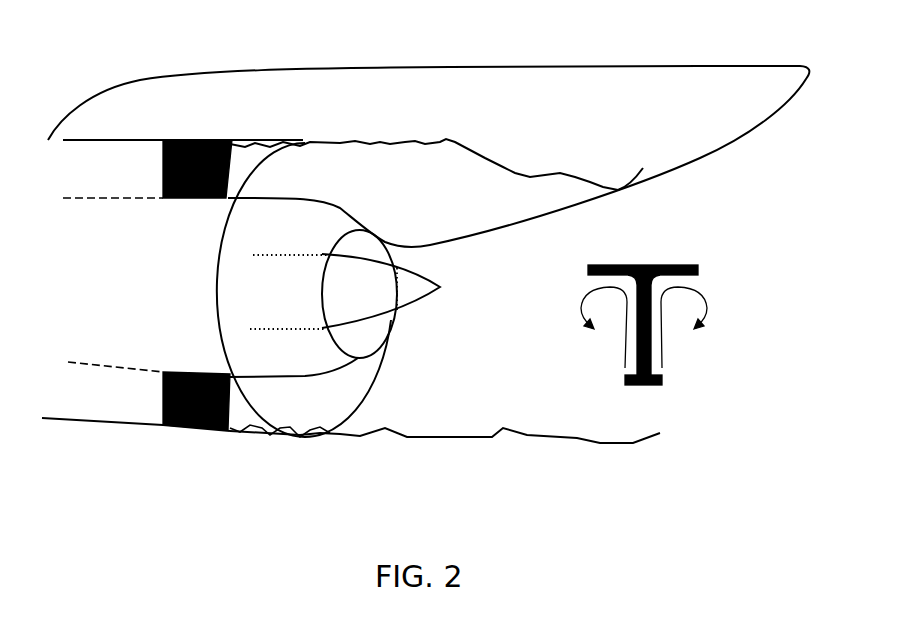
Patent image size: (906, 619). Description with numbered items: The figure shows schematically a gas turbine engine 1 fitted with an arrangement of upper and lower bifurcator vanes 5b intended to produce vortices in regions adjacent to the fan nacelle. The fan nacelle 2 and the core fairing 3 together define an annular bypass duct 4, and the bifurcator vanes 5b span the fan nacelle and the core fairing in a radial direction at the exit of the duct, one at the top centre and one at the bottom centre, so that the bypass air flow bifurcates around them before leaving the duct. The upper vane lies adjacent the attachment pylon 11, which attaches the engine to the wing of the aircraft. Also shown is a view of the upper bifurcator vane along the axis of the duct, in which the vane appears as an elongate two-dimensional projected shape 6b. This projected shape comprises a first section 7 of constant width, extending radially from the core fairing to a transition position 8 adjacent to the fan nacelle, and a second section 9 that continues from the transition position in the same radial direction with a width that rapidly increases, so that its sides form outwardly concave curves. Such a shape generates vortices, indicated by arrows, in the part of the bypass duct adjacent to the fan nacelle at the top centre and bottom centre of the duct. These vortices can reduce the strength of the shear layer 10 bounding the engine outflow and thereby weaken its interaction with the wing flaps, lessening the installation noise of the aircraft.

The gas turbine engine 1 is at (129, 440).
The fan nacelle 2 is at (100, 427).
The core fairing 3 is at (292, 378).
The annular bypass duct 4 is at (285, 412).
The bifurcator vanes 5b is at (193, 140).
The projected shape 6b is at (688, 324).
The first section 7 is at (641, 340).
The transition position 8 is at (661, 300).
The second section 9 is at (637, 275).
The shear layer 10 is at (506, 168).
The attachment pylon 11 is at (583, 121).